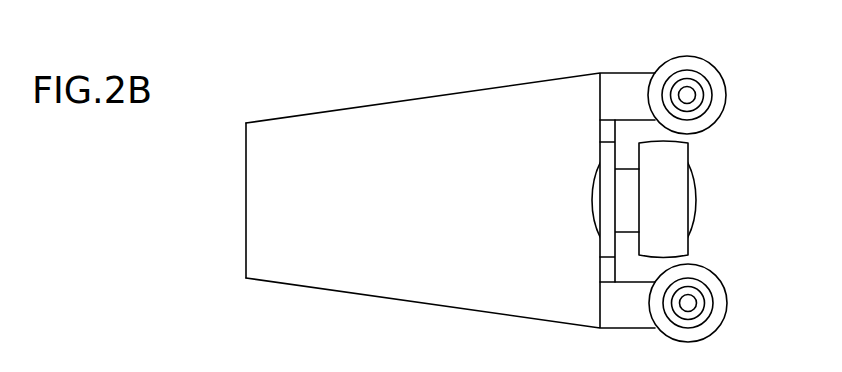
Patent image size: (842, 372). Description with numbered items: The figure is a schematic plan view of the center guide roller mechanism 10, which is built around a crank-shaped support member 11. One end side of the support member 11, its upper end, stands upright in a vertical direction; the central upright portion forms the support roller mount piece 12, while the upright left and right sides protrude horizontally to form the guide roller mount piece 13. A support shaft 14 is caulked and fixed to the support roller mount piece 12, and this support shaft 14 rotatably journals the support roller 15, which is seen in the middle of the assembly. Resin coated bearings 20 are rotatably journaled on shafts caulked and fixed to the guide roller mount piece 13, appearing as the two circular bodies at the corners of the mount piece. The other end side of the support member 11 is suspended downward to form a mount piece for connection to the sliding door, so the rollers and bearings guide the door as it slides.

The center guide roller mechanism 10 is at (506, 56).
The support member 11 is at (425, 96).
The support roller mount piece 12 is at (606, 155).
The guide roller mount piece 13 is at (627, 78).
The support shaft 14 is at (623, 200).
The support roller 15 is at (680, 189).
The resin coated bearing 20 is at (728, 58).